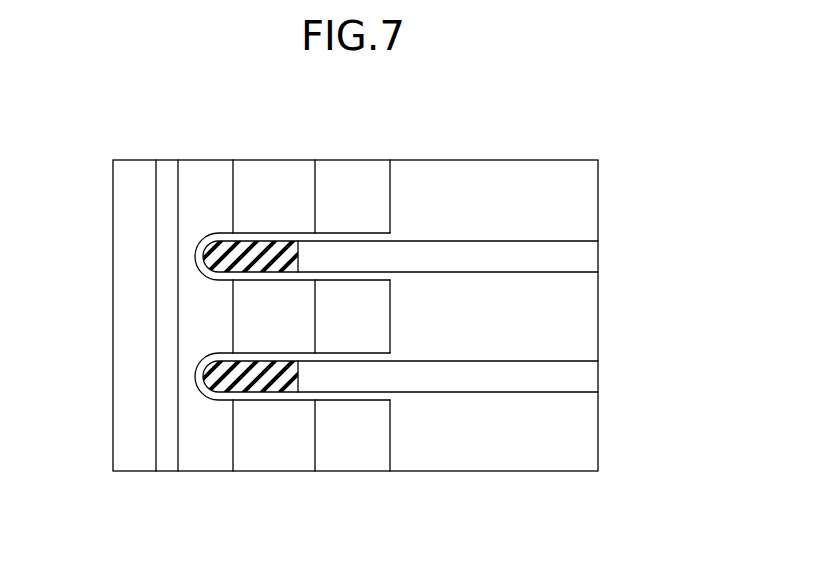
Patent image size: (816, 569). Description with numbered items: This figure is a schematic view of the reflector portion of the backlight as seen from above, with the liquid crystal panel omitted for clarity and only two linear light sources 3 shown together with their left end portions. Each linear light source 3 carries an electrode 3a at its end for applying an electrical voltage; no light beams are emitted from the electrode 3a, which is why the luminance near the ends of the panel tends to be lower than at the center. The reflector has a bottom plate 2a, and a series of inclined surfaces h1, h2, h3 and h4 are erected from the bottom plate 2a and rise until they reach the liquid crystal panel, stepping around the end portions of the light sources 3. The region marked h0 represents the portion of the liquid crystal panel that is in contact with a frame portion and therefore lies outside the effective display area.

The bottom plate 2a is at (487, 172).
The linear light source 3 is at (545, 247).
The electrode 3a is at (275, 245).
The liquid crystal panel portion in contact with frame portion h0 is at (122, 313).
The inclined surface h1 is at (357, 168).
The inclined surface h2 is at (302, 168).
The inclined surface h3 is at (207, 168).
The inclined surface h4 is at (167, 168).